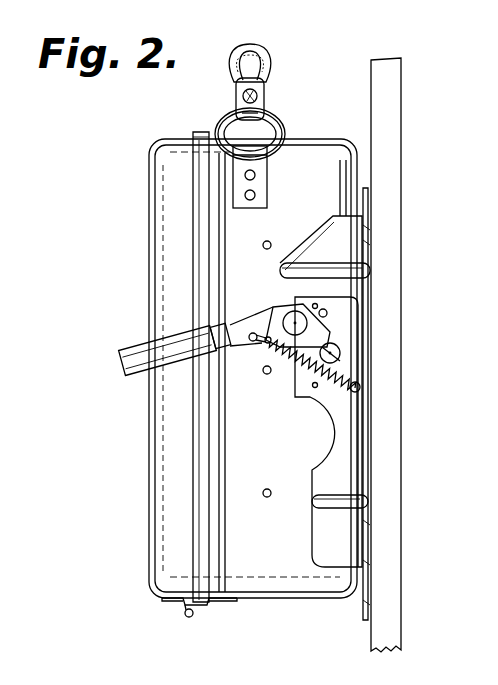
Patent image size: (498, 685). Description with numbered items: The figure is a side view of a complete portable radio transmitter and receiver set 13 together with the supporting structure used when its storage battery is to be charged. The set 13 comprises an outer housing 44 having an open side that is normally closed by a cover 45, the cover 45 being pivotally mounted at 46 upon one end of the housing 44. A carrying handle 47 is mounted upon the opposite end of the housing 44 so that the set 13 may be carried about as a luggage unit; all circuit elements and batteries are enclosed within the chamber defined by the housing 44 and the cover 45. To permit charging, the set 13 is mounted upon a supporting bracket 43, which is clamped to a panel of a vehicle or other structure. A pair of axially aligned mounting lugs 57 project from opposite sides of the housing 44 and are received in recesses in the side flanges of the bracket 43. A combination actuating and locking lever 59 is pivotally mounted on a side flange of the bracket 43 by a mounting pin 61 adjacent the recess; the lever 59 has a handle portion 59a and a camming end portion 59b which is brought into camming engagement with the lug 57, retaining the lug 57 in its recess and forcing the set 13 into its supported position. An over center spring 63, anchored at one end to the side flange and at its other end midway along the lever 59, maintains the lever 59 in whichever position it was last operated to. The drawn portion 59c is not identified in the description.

The portable radio set 13 is at (265, 566).
The supporting bracket 43 is at (352, 460).
The housing 44 is at (292, 590).
The cover 45 is at (155, 480).
The cover pivot axis 46 is at (192, 620).
The carrying handle 47 is at (272, 65).
The mounting lugs 57 is at (338, 355).
The combination actuating and locking lever 59 is at (255, 332).
The handle portion 59a is at (132, 367).
The camming end portion 59b is at (330, 331).
The roller 59c is at (335, 363).
The mounting pin 61 is at (293, 323).
The over center spring 63 is at (297, 357).